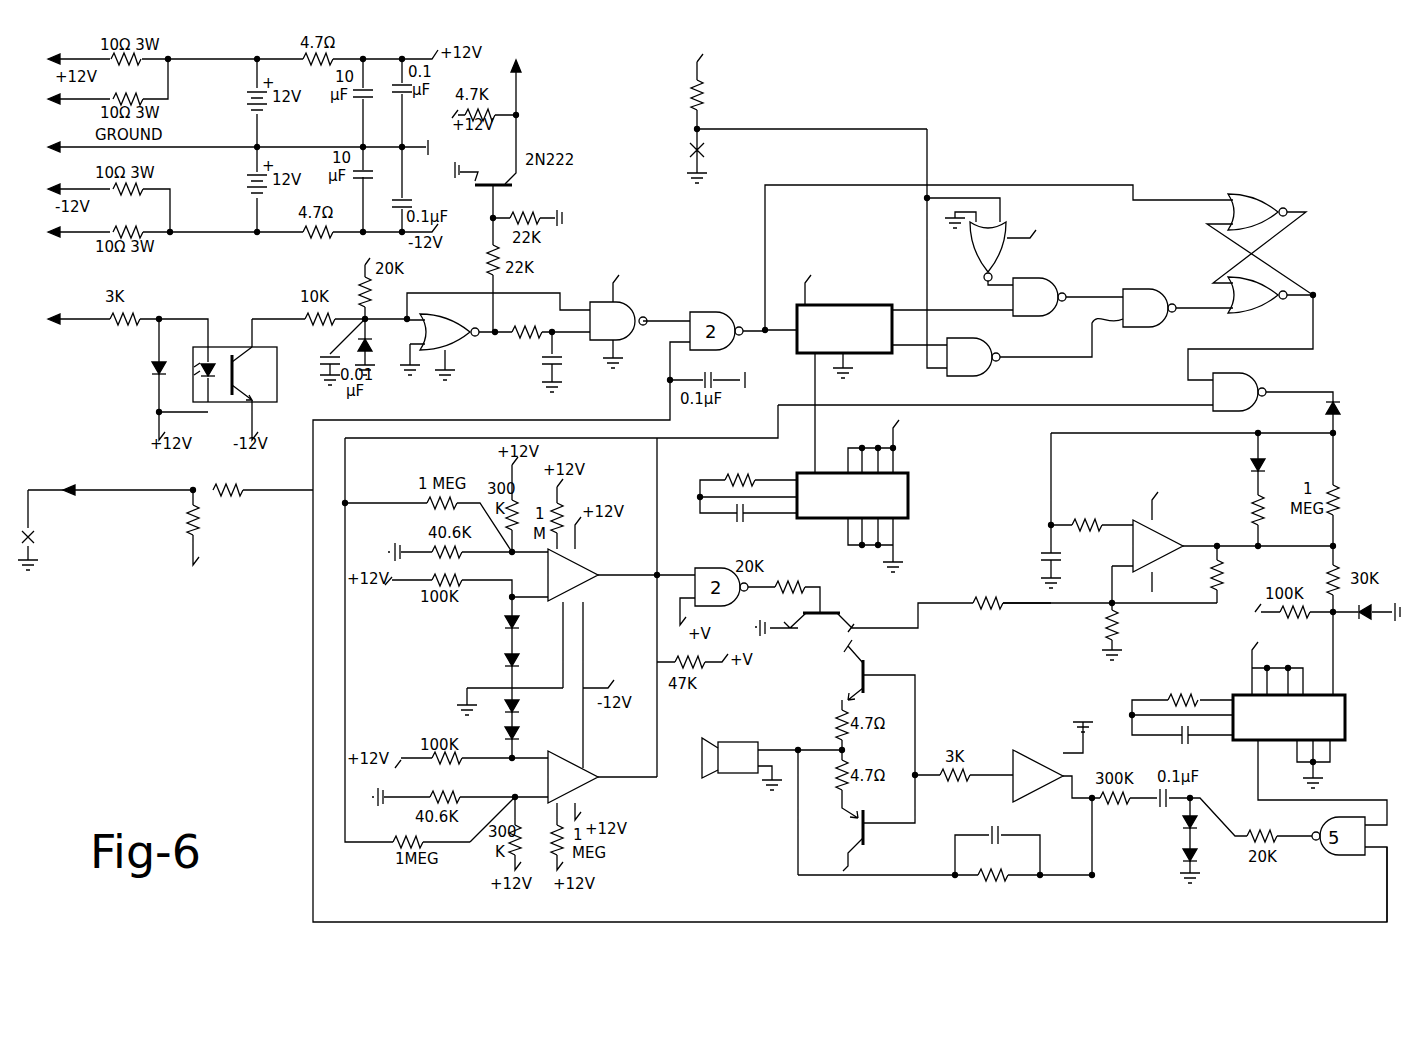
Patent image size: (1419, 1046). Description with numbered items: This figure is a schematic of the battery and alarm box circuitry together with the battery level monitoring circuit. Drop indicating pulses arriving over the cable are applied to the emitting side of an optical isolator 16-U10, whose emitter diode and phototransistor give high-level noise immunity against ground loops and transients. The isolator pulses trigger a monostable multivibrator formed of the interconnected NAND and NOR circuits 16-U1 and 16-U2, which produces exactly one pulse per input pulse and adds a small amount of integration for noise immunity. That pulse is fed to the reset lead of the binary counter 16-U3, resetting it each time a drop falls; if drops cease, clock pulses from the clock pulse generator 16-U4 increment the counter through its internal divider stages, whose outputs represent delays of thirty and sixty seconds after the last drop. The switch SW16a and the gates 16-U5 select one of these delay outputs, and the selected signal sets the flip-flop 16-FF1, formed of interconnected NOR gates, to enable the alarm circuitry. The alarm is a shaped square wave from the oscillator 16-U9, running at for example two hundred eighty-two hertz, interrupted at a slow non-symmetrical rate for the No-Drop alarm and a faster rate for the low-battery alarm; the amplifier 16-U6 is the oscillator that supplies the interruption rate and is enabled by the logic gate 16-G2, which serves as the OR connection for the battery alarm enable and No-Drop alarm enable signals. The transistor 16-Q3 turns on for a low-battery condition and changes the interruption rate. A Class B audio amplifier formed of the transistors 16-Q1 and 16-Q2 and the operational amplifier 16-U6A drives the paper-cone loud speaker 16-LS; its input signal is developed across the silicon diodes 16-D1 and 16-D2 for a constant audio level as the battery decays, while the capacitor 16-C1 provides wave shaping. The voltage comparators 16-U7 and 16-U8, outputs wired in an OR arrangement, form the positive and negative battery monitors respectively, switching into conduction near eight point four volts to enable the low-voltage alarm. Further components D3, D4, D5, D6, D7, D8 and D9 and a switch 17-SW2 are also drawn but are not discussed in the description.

The monostable multivibrator gate circuit 16-U1 is at (495, 341).
The monostable multivibrator gate circuit 16-U2 is at (640, 310).
The binary counter 16-U3 is at (889, 364).
The clock pulse generator 16-U4 is at (832, 495).
The gates 16-U5 is at (990, 323).
The amplifier 16-U6 is at (1169, 546).
The operational amplifier 16-U6A is at (1010, 760).
The voltage comparator 16-U7 is at (591, 577).
The voltage comparator 16-U8 is at (602, 772).
The oscillator 16-U9 is at (1264, 710).
The optical isolator 16-U10 is at (244, 362).
The flip-flop 16-FF1 is at (1256, 276).
The logic gate 16-G2 is at (1055, 380).
The transistor 16-Q1 is at (820, 670).
The transistor 16-Q2 is at (858, 840).
The transistor 16-Q3 is at (903, 612).
The capacitor 16-C1 is at (946, 839).
The silicon diode 16-D1 is at (1156, 818).
The silicon diode 16-D2 is at (1157, 860).
The loud speaker 16-LS is at (768, 768).
The reset switch 17-SW2 is at (165, 522).
The switch SW16a is at (807, 110).
The diode D3 is at (1256, 489).
The diode D4 is at (1315, 414).
The diode D5 is at (143, 369).
The diode D6 is at (494, 621).
The diode D7 is at (494, 659).
The diode D8 is at (527, 701).
The diode D9 is at (527, 734).